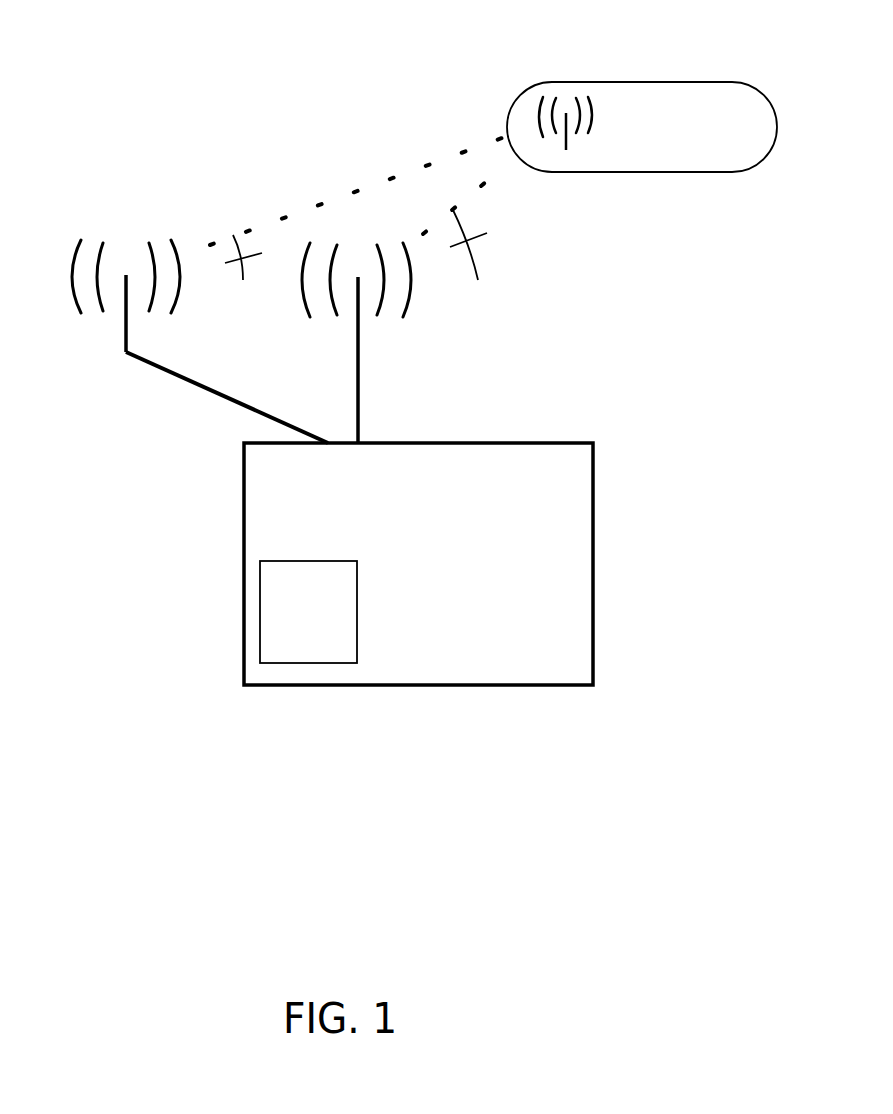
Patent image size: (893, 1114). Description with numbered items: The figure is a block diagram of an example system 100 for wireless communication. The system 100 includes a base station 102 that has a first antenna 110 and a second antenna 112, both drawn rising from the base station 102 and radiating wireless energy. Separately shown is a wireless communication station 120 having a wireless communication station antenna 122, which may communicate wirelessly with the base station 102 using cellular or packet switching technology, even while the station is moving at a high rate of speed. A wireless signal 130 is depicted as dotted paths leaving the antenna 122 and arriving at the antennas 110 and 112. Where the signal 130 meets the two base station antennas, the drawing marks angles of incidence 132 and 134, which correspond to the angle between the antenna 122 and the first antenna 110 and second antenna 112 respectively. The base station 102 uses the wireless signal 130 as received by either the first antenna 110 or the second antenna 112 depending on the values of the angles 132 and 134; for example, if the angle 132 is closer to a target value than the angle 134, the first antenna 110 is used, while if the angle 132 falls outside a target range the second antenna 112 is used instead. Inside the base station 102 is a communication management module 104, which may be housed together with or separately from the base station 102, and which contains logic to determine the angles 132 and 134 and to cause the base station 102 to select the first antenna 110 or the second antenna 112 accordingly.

The system 100 is at (172, 92).
The base station 102 is at (437, 578).
The communication management module 104 is at (327, 623).
The first antenna 110 is at (120, 331).
The second antenna 112 is at (348, 333).
The wireless communication station 120 is at (660, 138).
The wireless communication station antenna 122 is at (573, 148).
The wireless signal 130 is at (487, 173).
The angle of incidence 132 is at (250, 278).
The angle of incidence 134 is at (490, 268).